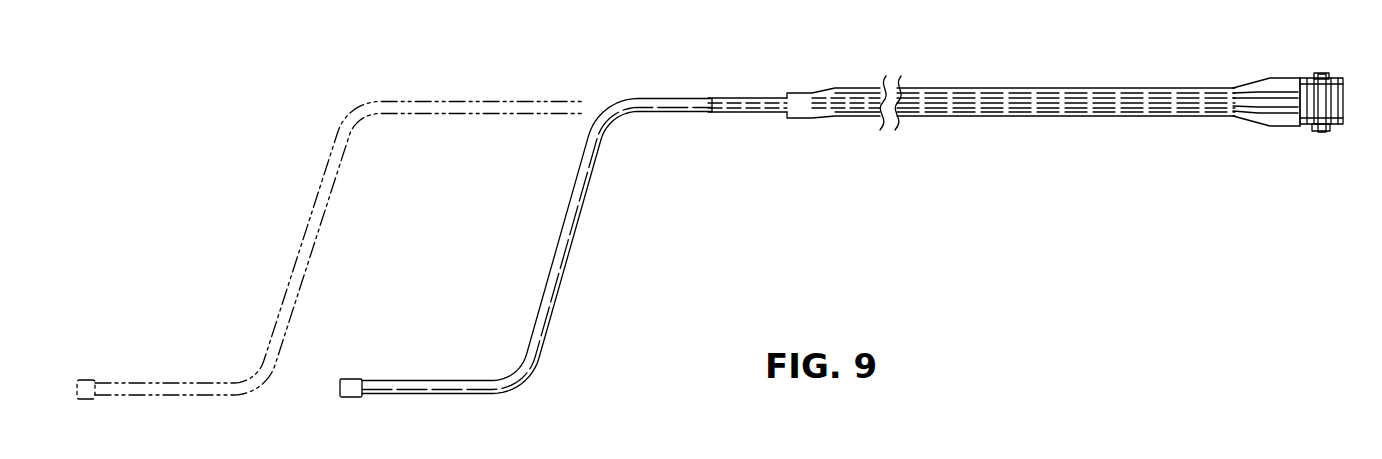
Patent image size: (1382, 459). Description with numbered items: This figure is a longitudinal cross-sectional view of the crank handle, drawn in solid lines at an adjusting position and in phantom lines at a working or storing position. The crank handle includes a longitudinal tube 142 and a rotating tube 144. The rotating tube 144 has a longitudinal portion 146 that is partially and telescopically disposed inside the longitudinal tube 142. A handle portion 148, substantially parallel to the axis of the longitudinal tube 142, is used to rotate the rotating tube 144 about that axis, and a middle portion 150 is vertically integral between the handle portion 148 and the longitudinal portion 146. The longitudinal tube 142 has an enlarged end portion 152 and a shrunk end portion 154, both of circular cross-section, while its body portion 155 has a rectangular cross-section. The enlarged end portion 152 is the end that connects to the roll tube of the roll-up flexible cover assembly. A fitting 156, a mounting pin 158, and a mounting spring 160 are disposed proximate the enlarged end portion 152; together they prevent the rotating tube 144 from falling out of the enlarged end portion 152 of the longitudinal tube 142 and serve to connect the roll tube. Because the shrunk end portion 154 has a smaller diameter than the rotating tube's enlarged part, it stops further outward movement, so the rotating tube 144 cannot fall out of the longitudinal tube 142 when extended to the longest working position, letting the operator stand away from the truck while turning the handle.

The longitudinal tube 142 is at (1006, 108).
The rotating tube 144 is at (733, 112).
The longitudinal portion 146 is at (733, 98).
The handle portion 148 is at (421, 381).
The middle portion 150 is at (566, 250).
The enlarged end portion 152 is at (1270, 79).
The shrunk end portion 154 is at (806, 90).
The body portion 155 is at (1000, 100).
The fitting 156 is at (1338, 105).
The mounting pin 158 is at (1324, 75).
The mounting spring 160 is at (1312, 130).